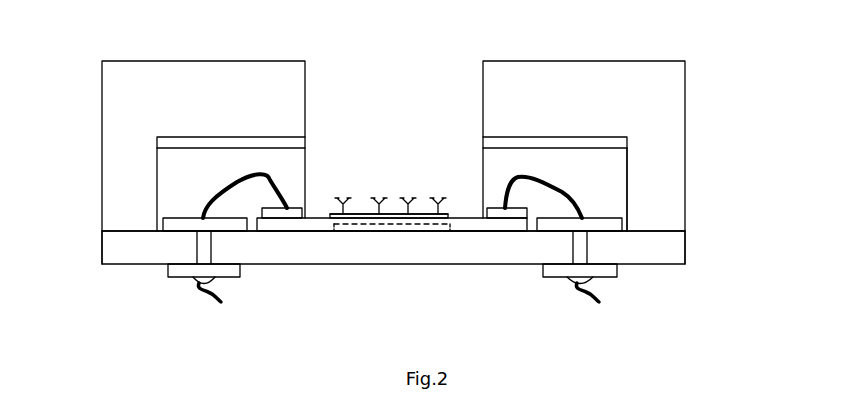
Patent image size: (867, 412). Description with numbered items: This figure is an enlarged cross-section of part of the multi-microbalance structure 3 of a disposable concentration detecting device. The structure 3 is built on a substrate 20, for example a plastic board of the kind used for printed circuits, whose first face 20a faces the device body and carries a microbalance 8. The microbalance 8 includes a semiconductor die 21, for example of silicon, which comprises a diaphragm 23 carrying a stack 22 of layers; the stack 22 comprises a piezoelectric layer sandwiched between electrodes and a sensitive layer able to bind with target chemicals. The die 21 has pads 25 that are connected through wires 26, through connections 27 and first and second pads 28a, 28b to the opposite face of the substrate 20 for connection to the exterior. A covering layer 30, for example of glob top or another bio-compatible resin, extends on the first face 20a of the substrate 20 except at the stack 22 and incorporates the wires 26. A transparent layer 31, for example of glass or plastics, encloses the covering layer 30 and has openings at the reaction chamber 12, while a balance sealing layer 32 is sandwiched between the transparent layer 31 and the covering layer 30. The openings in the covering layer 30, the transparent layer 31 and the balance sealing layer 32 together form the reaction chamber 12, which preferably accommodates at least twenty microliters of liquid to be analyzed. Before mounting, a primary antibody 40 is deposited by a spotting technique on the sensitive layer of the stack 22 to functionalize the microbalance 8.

The multi-microbalance structure 3 is at (76, 71).
The microbalance 8 is at (400, 180).
The reaction chamber 12 is at (344, 66).
The substrate 20 is at (668, 250).
The first face 20a is at (655, 226).
The die 21 is at (288, 228).
The stack 22 is at (447, 213).
The diaphragm 23 is at (399, 234).
The pads 25 is at (298, 207).
The wires 26 is at (239, 186).
The connections 27 is at (198, 242).
The first pads 28a is at (187, 222).
The second pads 28b is at (187, 275).
The covering layer 30 is at (613, 165).
The transparent layer 31 is at (187, 88).
The balance sealing layer 32 is at (573, 137).
The primary antibody 40 is at (379, 199).